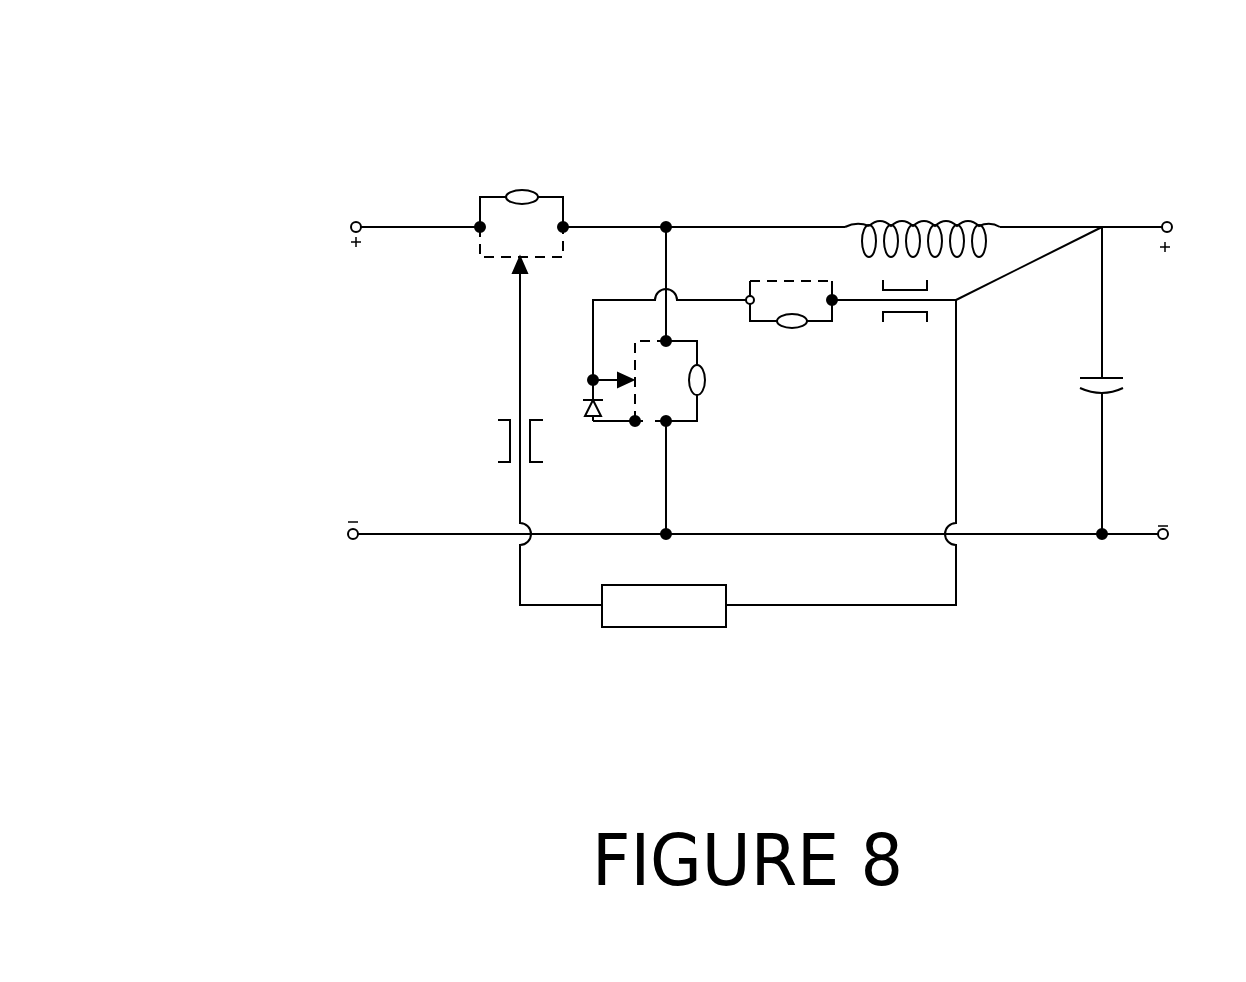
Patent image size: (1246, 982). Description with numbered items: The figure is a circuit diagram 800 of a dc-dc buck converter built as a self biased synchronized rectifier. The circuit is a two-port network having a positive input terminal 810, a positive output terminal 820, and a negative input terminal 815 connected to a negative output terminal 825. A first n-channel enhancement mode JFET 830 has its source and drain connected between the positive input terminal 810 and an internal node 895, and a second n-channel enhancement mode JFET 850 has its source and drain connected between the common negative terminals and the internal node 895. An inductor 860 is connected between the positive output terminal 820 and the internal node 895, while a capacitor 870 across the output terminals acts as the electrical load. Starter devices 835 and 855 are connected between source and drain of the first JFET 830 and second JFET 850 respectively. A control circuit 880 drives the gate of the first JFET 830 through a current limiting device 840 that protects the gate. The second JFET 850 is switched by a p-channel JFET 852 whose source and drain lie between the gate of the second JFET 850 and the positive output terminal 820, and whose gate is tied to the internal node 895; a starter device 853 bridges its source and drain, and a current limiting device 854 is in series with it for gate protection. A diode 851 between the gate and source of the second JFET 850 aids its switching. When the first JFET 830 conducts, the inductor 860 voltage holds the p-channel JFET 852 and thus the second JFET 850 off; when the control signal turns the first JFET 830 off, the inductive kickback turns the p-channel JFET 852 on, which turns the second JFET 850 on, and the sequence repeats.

The circuit diagram 800 is at (250, 107).
The positive input terminal 810 is at (356, 221).
The negative input terminal 815 is at (352, 540).
The positive output terminal 820 is at (1170, 223).
The negative output terminal 825 is at (1165, 542).
The first n-channel enhancement mode JFET 830 is at (500, 258).
The starter device 835 is at (545, 190).
The current limiting device 840 is at (498, 462).
The second n-channel enhancement mode JFET 850 is at (640, 424).
The diode 851 is at (590, 412).
The p-channel JFET 852 is at (760, 280).
The starter device 853 is at (792, 329).
The current limiting device 854 is at (883, 312).
The starter device 855 is at (705, 388).
The inductor 860 is at (880, 218).
The capacitor 870 is at (1127, 383).
The control circuit 880 is at (705, 628).
The internal node 895 is at (668, 225).